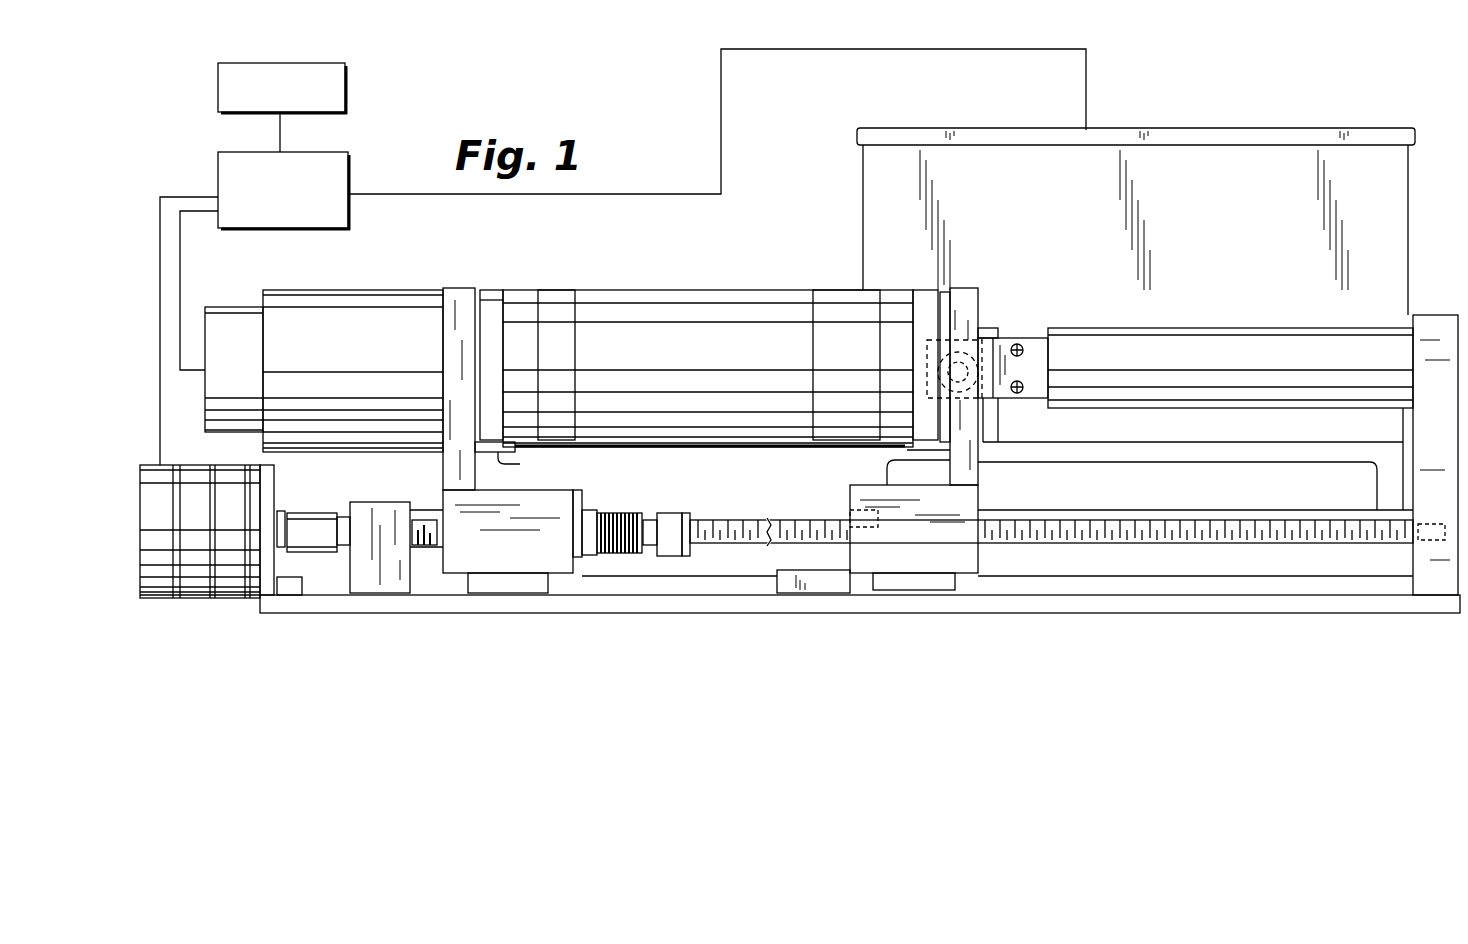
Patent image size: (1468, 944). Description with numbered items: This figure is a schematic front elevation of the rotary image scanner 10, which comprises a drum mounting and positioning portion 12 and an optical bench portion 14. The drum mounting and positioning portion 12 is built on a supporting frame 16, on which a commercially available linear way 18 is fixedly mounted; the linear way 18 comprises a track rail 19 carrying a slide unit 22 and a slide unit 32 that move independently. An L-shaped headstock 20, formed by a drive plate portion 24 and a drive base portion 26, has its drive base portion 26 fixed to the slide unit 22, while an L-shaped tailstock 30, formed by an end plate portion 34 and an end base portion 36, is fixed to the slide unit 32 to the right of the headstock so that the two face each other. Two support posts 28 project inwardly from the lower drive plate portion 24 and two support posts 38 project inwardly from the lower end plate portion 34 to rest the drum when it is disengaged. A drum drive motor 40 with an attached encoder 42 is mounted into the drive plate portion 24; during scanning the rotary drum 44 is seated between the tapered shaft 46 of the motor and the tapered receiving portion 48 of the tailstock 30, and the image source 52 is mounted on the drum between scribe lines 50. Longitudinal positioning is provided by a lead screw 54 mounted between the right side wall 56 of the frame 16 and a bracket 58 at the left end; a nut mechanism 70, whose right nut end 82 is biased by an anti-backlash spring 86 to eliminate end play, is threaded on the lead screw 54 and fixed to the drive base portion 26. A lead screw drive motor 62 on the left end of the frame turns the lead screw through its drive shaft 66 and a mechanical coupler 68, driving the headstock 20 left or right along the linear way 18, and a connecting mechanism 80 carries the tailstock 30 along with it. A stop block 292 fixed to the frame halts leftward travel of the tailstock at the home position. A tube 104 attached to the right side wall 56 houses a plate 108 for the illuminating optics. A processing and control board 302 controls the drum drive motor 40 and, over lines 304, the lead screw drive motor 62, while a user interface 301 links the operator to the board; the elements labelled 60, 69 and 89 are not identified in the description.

The rotary image scanner 10 is at (798, 131).
The drum mounting and positioning portion 12 is at (712, 614).
The optical bench portion 14 is at (1413, 172).
The supporting frame 16 is at (1460, 613).
The linear way 18 is at (1290, 598).
The track rail 19 is at (1212, 590).
The headstock 20 is at (443, 463).
The slide unit 22 is at (495, 593).
The drive plate portion 24 is at (460, 288).
The drive base portion 26 is at (458, 553).
The support posts 28 is at (522, 465).
The tailstock 30 is at (985, 481).
The slide unit 32 is at (915, 590).
The end plate portion 34 is at (965, 288).
The end base portion 36 is at (978, 573).
The support posts 38 is at (905, 447).
The drum drive motor 40 is at (308, 290).
The encoder 42 is at (242, 307).
The rotary drum 44 is at (515, 290).
The tapered shaft 46 is at (478, 372).
The tapered receiving portion 48 is at (925, 290).
The scribe lines 50 is at (555, 290).
The image source 52 is at (722, 290).
The lead screw 54 is at (1152, 547).
The right side wall 56 is at (1437, 315).
The bracket 58 is at (372, 585).
The coupling 60 is at (345, 548).
The lead screw drive motor 62 is at (204, 600).
The drive shaft 66 is at (283, 550).
The mechanical coupler 68 is at (313, 554).
The motor mount plate 69 is at (262, 600).
The nut mechanism 70 is at (665, 560).
The connecting mechanism 80 is at (793, 530).
The right nut end 82 is at (677, 513).
The anti-backlash spring 86 is at (618, 556).
The spring 89 is at (598, 513).
The tube 104 is at (1240, 330).
The plate 108 is at (1003, 330).
The stop block 292 is at (818, 593).
The user interface 301 is at (347, 84).
The lines 302 is at (200, 213).
The lines 304 is at (194, 192).